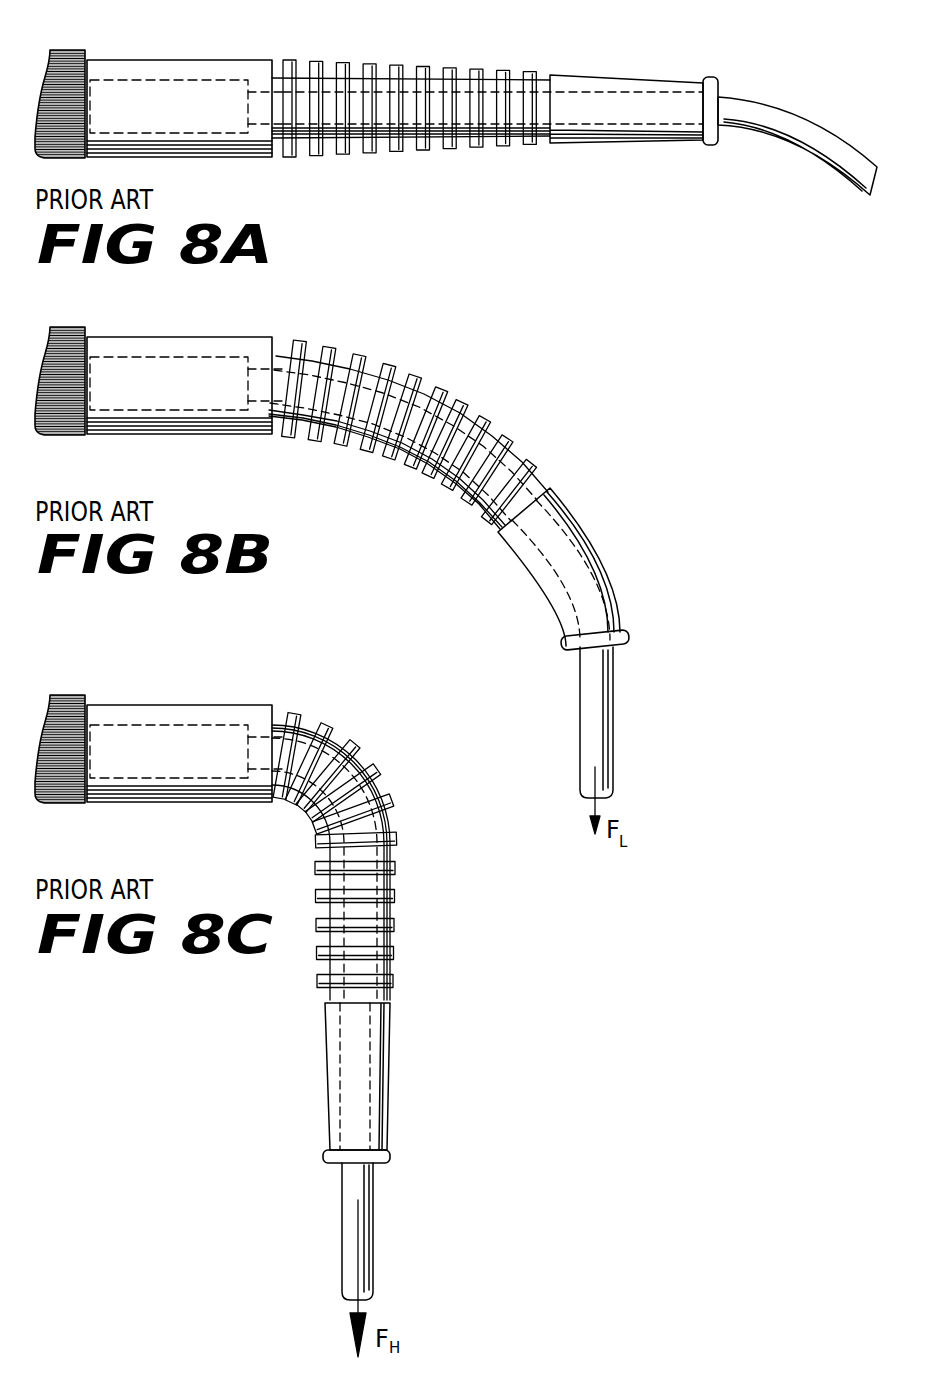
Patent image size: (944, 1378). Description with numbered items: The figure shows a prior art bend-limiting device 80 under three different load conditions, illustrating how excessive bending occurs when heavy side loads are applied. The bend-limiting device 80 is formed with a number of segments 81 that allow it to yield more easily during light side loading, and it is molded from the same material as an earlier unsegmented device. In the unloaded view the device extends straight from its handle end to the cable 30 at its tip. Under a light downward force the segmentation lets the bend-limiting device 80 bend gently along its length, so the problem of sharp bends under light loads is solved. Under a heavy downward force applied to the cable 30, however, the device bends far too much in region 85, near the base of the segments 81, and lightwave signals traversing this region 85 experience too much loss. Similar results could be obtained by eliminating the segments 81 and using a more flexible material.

In FIG. 8A, the cable 30 is at (807, 110).
In FIG. 8B, the cable 30 is at (614, 723).
In FIG. 8C, the cable 30 is at (377, 1220).
In FIG. 8A, the bend-limiting device 80 is at (397, 66).
In FIG. 8B, the bend-limiting device 80 is at (418, 380).
In FIG. 8C, the bend-limiting device 80 is at (401, 835).
In FIG. 8A, the segments 81 is at (515, 78).
In FIG. 8C, the region 85 is at (270, 808).